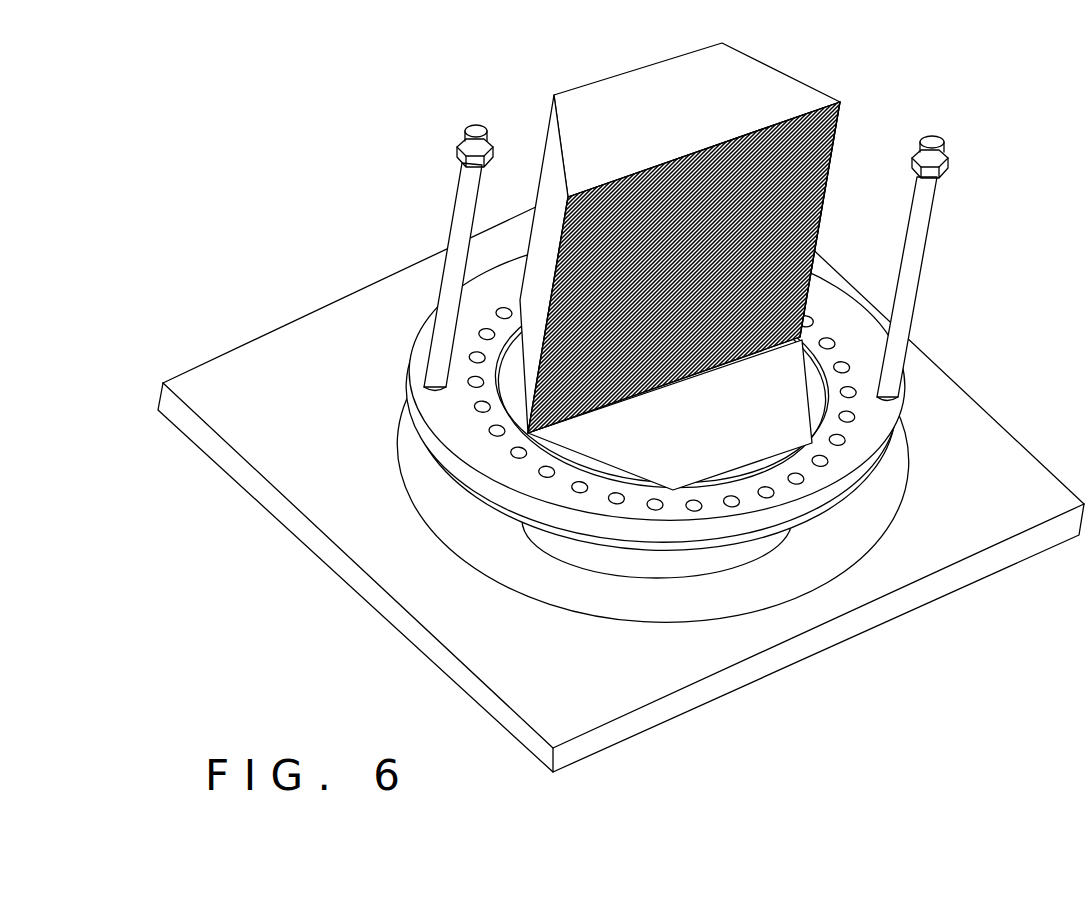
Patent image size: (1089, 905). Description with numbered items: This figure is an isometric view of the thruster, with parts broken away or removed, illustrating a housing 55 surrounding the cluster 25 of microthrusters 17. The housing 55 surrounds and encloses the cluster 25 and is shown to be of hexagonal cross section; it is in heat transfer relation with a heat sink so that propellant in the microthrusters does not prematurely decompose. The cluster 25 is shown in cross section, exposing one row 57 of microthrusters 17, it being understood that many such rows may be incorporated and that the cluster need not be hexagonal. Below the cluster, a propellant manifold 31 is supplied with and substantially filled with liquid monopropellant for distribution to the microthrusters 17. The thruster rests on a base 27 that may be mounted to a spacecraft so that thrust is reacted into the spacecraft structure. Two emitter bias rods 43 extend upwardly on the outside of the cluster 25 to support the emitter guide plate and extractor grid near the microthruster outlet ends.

The microthrusters 17 is at (790, 208).
The cluster of microthrusters 25 is at (852, 113).
The base 27 is at (773, 676).
The propellant manifold 31 is at (490, 508).
The emitter bias rods 43 is at (452, 187).
The housing 55 is at (741, 263).
The row of microthrusters 57 is at (662, 167).